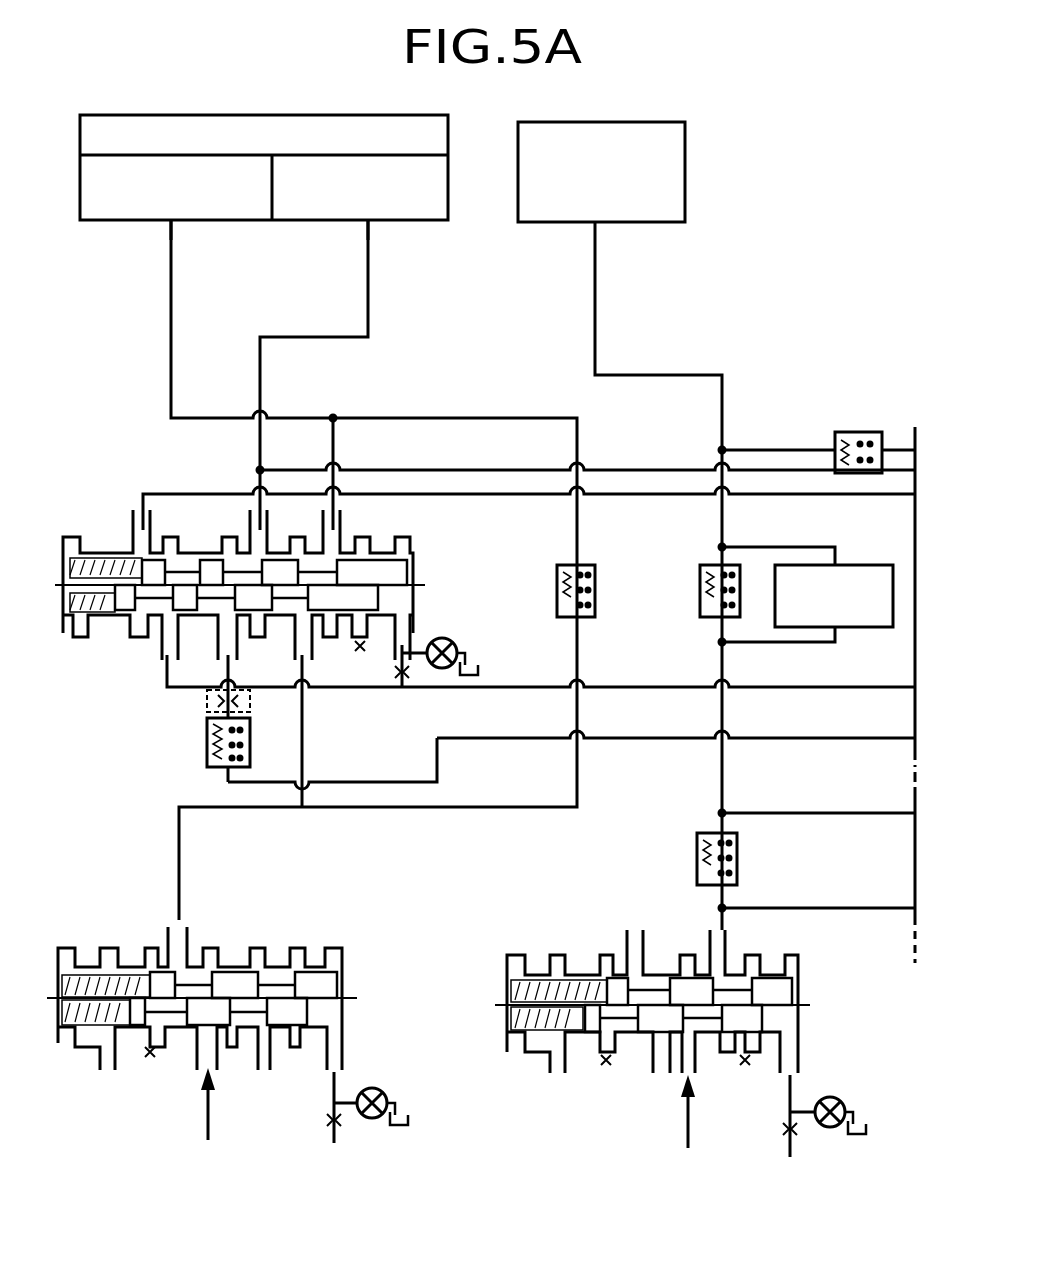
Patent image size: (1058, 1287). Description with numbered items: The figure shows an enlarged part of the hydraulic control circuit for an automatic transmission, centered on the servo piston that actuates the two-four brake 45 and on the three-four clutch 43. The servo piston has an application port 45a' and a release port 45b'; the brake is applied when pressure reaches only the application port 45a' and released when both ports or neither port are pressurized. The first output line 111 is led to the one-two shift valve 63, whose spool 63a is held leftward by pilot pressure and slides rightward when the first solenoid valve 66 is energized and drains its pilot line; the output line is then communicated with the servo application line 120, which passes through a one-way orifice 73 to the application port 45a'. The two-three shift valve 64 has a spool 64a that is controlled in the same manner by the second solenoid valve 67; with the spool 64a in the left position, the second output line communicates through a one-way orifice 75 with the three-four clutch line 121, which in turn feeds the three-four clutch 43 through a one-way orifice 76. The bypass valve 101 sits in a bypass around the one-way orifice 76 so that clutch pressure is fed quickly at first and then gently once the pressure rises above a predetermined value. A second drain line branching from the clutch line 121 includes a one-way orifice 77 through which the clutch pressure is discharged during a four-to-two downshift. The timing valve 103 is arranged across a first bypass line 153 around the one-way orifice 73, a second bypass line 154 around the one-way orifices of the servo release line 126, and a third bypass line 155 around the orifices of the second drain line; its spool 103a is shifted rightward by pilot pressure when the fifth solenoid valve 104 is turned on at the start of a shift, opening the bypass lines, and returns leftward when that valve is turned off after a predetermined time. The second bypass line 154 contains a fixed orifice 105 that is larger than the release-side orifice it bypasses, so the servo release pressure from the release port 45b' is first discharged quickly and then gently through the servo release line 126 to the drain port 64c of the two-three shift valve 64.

The 2-4 brake 45 is at (258, 114).
The application port 45a' is at (215, 241).
The release port 45b' is at (418, 241).
The 3-4 clutch 43 is at (672, 122).
The 3-4 clutch line 121 is at (648, 374).
The servo application line 120 is at (392, 418).
The servo release line 126 is at (638, 470).
The third bypass line 155 is at (184, 494).
The first bypass line 153 is at (334, 442).
The second bypass line 154 is at (256, 505).
The timing valve 103 is at (286, 584).
The spool of the timing valve 103a is at (372, 572).
The fifth solenoid valve 104 is at (453, 645).
The fixed orifice 105 is at (250, 702).
The one-way orifice 73 is at (596, 590).
The one-way orifice 76 is at (700, 598).
The bypass valve 101 is at (853, 565).
The one-way orifice 77 is at (855, 432).
The one-way orifice 75 is at (738, 858).
The 1-2 shift valve 63 is at (215, 979).
The spool of the 1-2 shift valve 63a is at (234, 972).
The first solenoid valve 66 is at (376, 1088).
The first output line 111 is at (210, 1113).
The 2-3 shift valve 64 is at (676, 1022).
The spool of the 2-3 shift valve 64a is at (673, 978).
The drain port of the 2-3 shift valve 64c is at (757, 1040).
The second solenoid valve 67 is at (833, 1097).